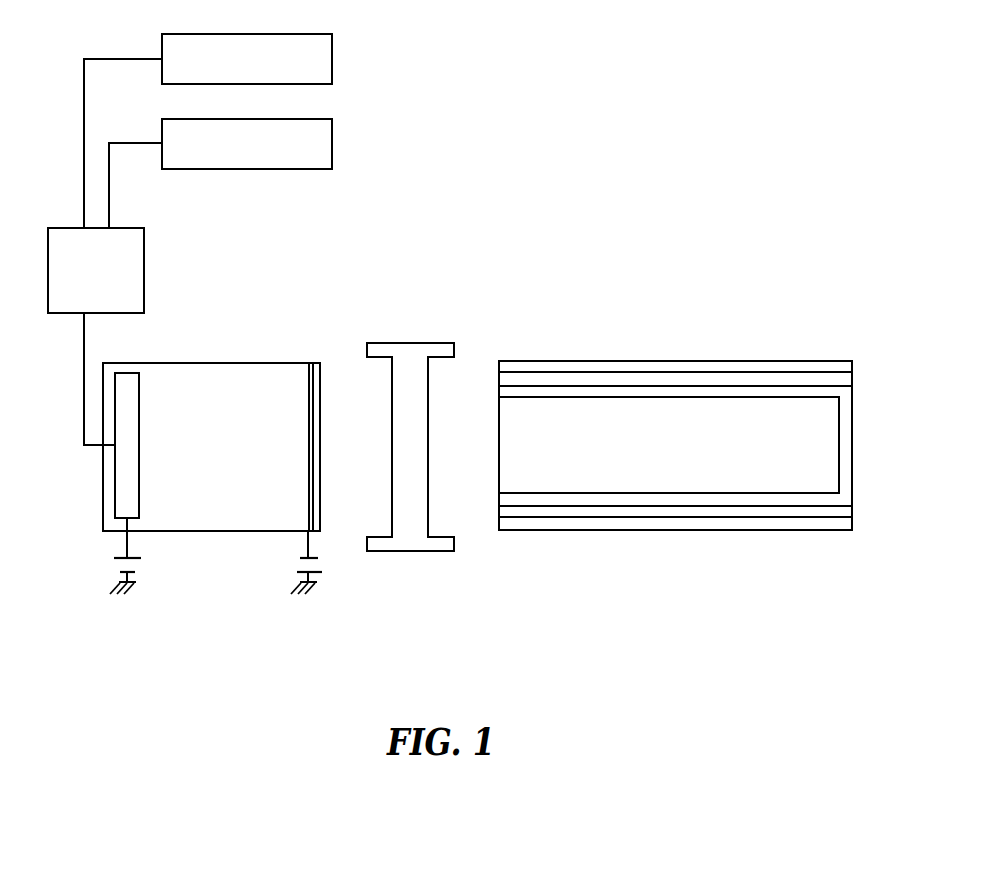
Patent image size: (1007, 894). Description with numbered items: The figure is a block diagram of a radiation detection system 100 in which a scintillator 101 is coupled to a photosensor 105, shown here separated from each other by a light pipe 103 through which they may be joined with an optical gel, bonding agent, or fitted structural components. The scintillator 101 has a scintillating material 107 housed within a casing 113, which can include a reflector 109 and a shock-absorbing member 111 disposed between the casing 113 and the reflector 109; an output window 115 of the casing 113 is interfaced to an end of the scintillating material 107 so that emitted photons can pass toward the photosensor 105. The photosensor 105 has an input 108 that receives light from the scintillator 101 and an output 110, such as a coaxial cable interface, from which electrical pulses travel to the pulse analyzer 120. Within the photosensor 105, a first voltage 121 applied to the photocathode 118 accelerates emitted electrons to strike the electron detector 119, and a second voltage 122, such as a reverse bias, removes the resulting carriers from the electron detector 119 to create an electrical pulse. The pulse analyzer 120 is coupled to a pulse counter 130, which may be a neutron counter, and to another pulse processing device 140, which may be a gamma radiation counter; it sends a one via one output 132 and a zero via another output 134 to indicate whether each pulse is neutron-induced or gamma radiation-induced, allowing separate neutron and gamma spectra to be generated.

The radiation detection system 100 is at (658, 138).
The scintillator 101 is at (708, 532).
The light pipe 103 is at (417, 551).
The photosensor 105 is at (211, 447).
The scintillating material 107 is at (669, 445).
The input 108 is at (320, 457).
The reflector 109 is at (720, 392).
The output 110 is at (95, 453).
The shock-absorbing member 111 is at (649, 381).
The casing 113 is at (590, 361).
The output window 115 is at (499, 457).
The photocathode 118 is at (307, 430).
The electron detector 119 is at (140, 419).
The pulse analyzer 120 is at (147, 280).
The first voltage 121 is at (297, 605).
The second voltage 122 is at (117, 605).
The pulse counter 130 is at (333, 57).
The output 132 is at (77, 220).
The output 134 is at (115, 220).
The pulse processing device 140 is at (333, 143).